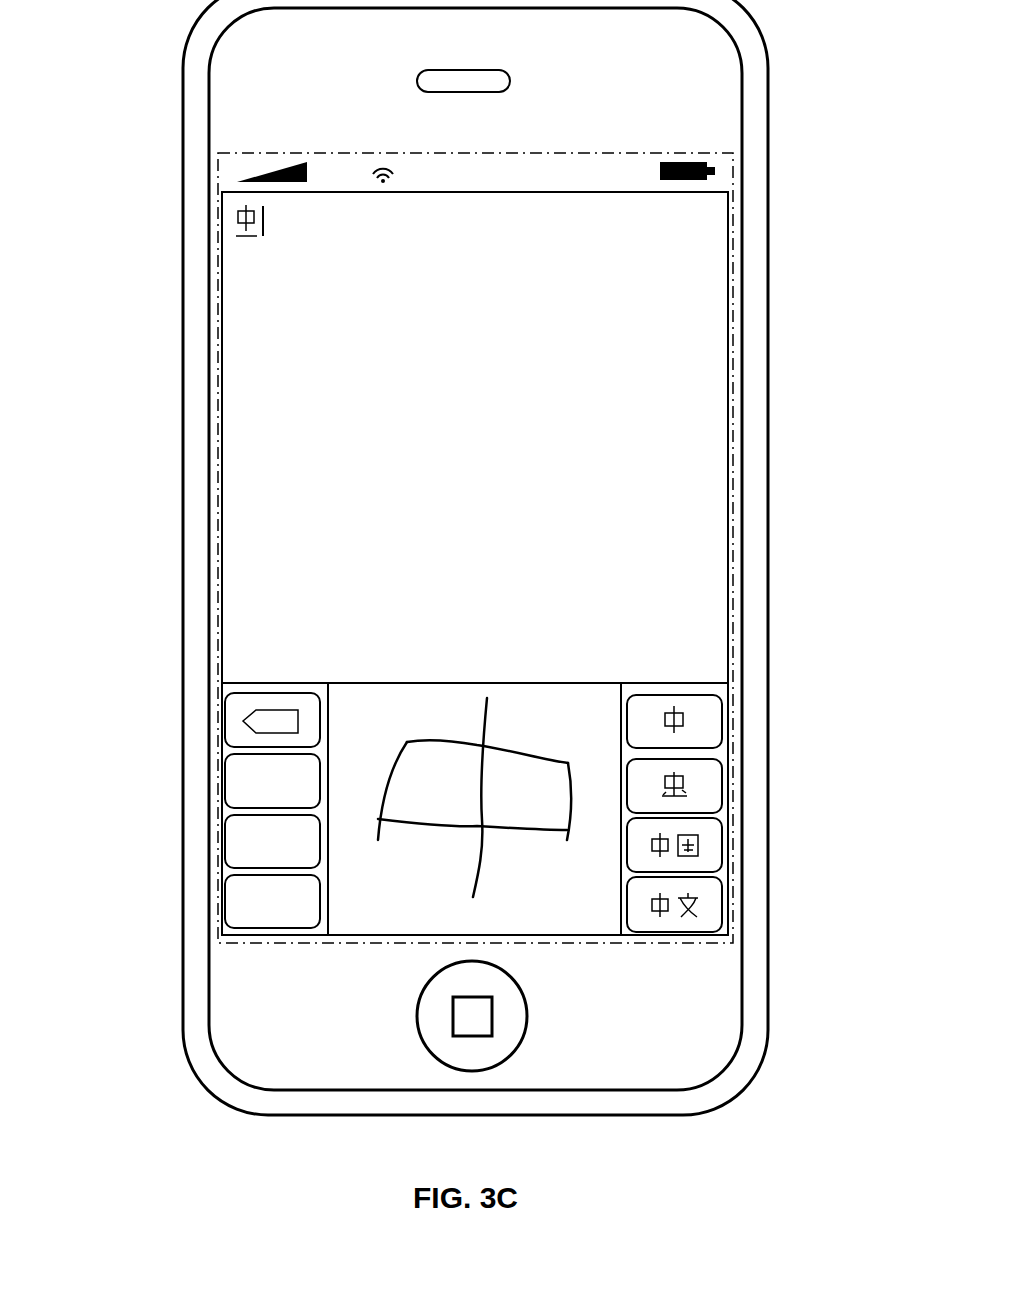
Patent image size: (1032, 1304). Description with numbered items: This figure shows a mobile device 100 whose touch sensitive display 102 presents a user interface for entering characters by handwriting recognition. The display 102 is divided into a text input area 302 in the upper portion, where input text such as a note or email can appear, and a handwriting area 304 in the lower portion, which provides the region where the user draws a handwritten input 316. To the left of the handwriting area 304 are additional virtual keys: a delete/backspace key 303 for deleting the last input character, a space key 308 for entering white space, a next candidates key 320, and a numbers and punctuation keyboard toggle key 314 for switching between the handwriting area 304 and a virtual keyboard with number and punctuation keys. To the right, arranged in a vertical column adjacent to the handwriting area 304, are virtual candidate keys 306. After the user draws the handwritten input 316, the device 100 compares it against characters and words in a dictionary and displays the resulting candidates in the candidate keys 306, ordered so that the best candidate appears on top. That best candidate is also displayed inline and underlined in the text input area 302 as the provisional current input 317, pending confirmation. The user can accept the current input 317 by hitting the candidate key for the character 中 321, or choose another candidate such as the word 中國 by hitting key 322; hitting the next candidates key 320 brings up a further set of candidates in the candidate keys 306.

The mobile device 100 is at (770, 98).
The touch sensitive display 102 is at (733, 172).
The text input area 302 is at (637, 469).
The delete/backspace key 303 is at (225, 720).
The handwriting area 304 is at (604, 924).
The virtual candidate keys 306 is at (725, 684).
The space key 308 is at (225, 780).
The numbers and punctuation keyboard toggle key 314 is at (225, 901).
The handwritten input 316 is at (446, 700).
The provisional current input 317 is at (248, 244).
The next candidates key 320 is at (225, 841).
The candidate key corresponding to the character 中 321 is at (722, 722).
The candidate key for 中國 322 is at (722, 845).